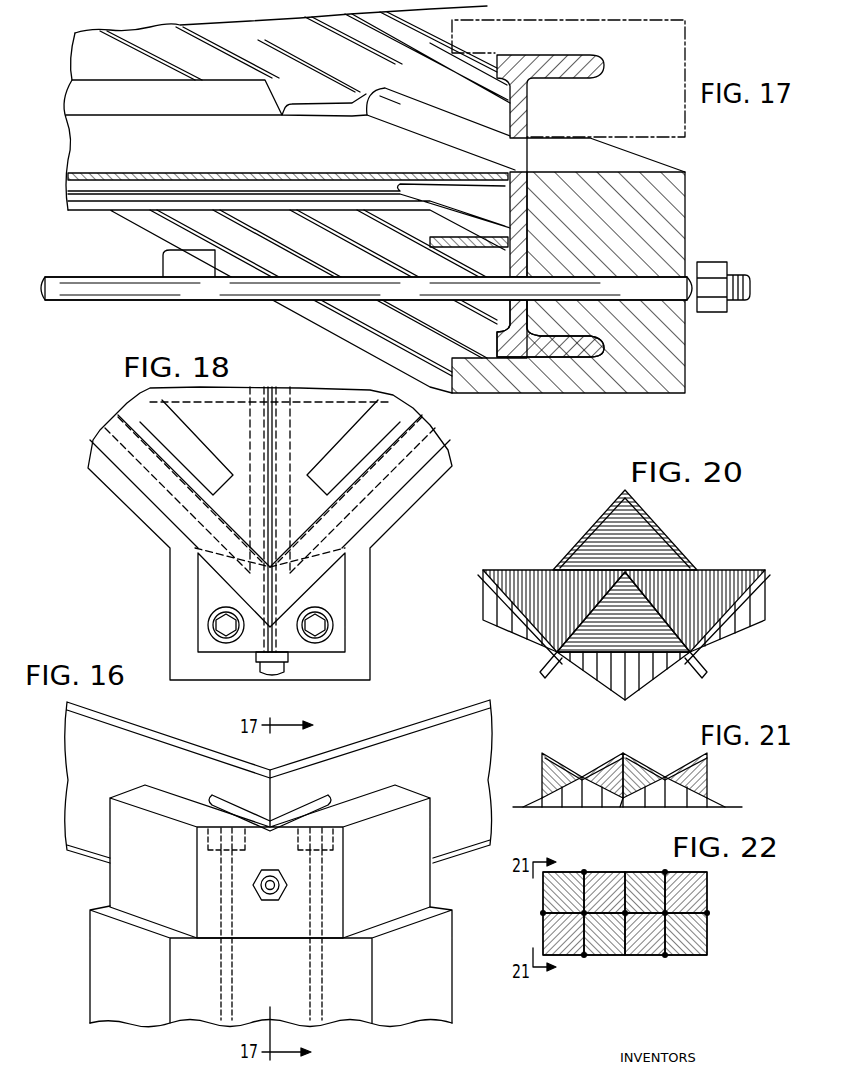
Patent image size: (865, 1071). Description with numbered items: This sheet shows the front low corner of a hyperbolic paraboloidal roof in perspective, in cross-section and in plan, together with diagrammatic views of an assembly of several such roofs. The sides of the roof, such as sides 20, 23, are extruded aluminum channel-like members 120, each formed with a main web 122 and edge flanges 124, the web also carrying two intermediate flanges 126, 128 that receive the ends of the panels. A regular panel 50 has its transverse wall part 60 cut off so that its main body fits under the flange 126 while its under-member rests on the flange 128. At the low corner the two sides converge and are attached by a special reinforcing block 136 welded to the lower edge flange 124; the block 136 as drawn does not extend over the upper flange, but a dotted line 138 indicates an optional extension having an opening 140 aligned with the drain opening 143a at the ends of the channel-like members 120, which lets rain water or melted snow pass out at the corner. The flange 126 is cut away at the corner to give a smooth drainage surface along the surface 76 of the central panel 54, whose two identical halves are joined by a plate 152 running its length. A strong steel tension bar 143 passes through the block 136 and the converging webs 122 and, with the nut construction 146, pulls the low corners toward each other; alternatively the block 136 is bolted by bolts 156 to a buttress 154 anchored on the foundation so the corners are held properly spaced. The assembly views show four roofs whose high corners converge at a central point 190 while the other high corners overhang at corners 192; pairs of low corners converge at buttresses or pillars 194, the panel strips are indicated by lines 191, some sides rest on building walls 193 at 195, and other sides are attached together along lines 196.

In FIG. 16, the side of the roof 20 is at (418, 735).
In FIG. 16, the side of the roof 23 is at (128, 737).
In FIG. 20, the regular panel 50 is at (607, 521).
In FIG. 17, the central panel 54 is at (92, 136).
In FIG. 17, the transverse wall part 60 is at (127, 91).
In FIG. 17, the half of the central panel 76 is at (80, 163).
In FIG. 17, the channel-like member 120 is at (592, 116).
In FIG. 16, the channel-like member 120 is at (67, 865).
In FIG. 17, the main web 122 is at (517, 224).
In FIG. 17, the edge flange 124 is at (535, 63).
In FIG. 18, the edge flange 124 is at (397, 477).
In FIG. 17, the intermediate flange 126 is at (312, 104).
In FIG. 18, the intermediate flange 126 is at (338, 452).
In FIG. 17, the intermediate flange 128 is at (465, 246).
In FIG. 17, the reinforcing block 136 is at (630, 383).
In FIG. 18, the reinforcing block 136 is at (338, 588).
In FIG. 16, the reinforcing block 136 is at (422, 889).
In FIG. 17, the block extension (dotted line) 138 is at (687, 67).
In FIG. 17, the opening (dotted line) 140 is at (625, 136).
In FIG. 17, the tension bar 143 is at (75, 297).
In FIG. 18, the tension bar 143 is at (274, 675).
In FIG. 16, the tension bar 143 is at (270, 894).
In FIG. 17, the drain opening 143a is at (431, 118).
In FIG. 16, the drain opening 143a is at (307, 803).
In FIG. 17, the nut construction 146 is at (710, 262).
In FIG. 17, the plate 152 is at (152, 180).
In FIG. 18, the buttress 154 is at (362, 659).
In FIG. 16, the buttress 154 is at (443, 972).
In FIG. 18, the bolt 156 is at (322, 620).
In FIG. 16, the bolt 156 is at (315, 900).
In FIG. 20, the central point 190 is at (627, 572).
In FIG. 21, the central point 190 is at (623, 753).
In FIG. 22, the central point 190 is at (665, 913).
In FIG. 20, the lines representing strips 191 is at (703, 592).
In FIG. 22, the lines representing strips 191 is at (562, 880).
In FIG. 20, the overhanging corner 192 is at (624, 490).
In FIG. 21, the overhanging corner 192 is at (542, 753).
In FIG. 22, the overhanging corner 192 is at (625, 872).
In FIG. 20, the building wall 193 is at (493, 593).
In FIG. 20, the buttress or pillar 194 is at (541, 671).
In FIG. 21, the buttress or pillar 194 is at (537, 797).
In FIG. 22, the buttress or pillar 194 is at (584, 872).
In FIG. 20, the resting location 195 is at (507, 607).
In FIG. 20, the attachment line 196 is at (567, 632).